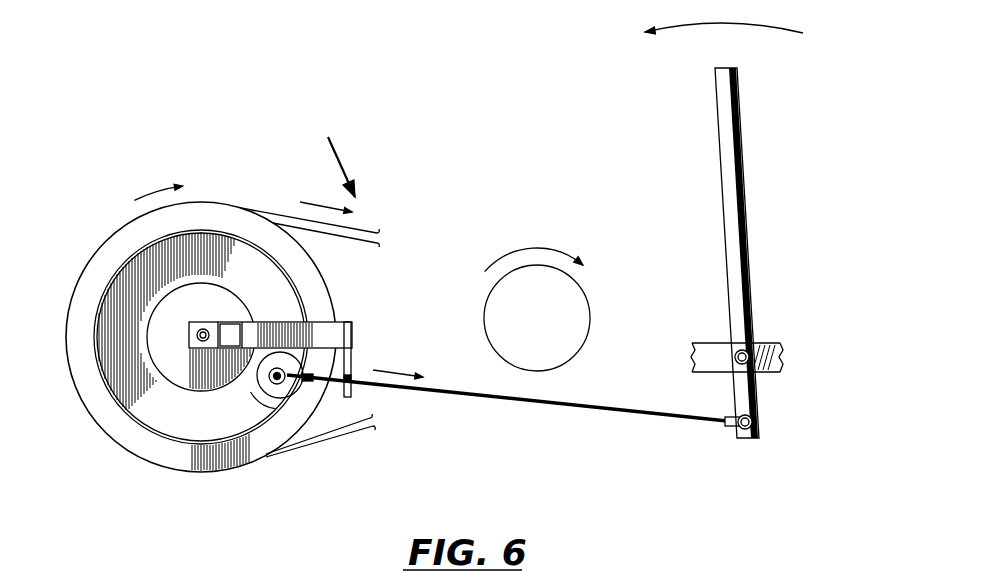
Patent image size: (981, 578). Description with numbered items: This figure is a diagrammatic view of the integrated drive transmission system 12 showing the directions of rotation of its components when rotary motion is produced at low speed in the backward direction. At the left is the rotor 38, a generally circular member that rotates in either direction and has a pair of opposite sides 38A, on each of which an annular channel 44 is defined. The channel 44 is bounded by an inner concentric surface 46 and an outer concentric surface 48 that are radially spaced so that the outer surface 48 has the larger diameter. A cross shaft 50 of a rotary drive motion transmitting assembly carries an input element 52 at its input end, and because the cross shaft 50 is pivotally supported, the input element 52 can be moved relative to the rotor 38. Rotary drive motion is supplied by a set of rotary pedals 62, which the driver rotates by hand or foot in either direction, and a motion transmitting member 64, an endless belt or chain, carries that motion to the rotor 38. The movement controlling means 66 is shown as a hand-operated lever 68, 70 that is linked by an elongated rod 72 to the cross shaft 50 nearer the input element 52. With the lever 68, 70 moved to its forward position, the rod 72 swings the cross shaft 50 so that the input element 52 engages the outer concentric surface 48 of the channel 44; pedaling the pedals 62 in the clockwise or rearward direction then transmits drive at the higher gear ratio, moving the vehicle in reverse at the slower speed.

The integrated drive transmission system 12 is at (336, 153).
The rotor 38 is at (100, 427).
The opposite sides of the rotor 38A is at (98, 395).
The annular channel 44 is at (128, 339).
The inner concentric surface 46 is at (248, 302).
The outer concentric surface 48 is at (300, 308).
The cross shaft 50 is at (269, 377).
The input element 52 is at (282, 358).
The set of rotary pedals 62 is at (565, 307).
The motion transmitting member 64 is at (350, 233).
The movement controlling means 66 is at (705, 103).
The hand-operated lever 68 is at (682, 253).
The hand-operated lever 70 is at (728, 152).
The elongated rod 72 is at (623, 415).